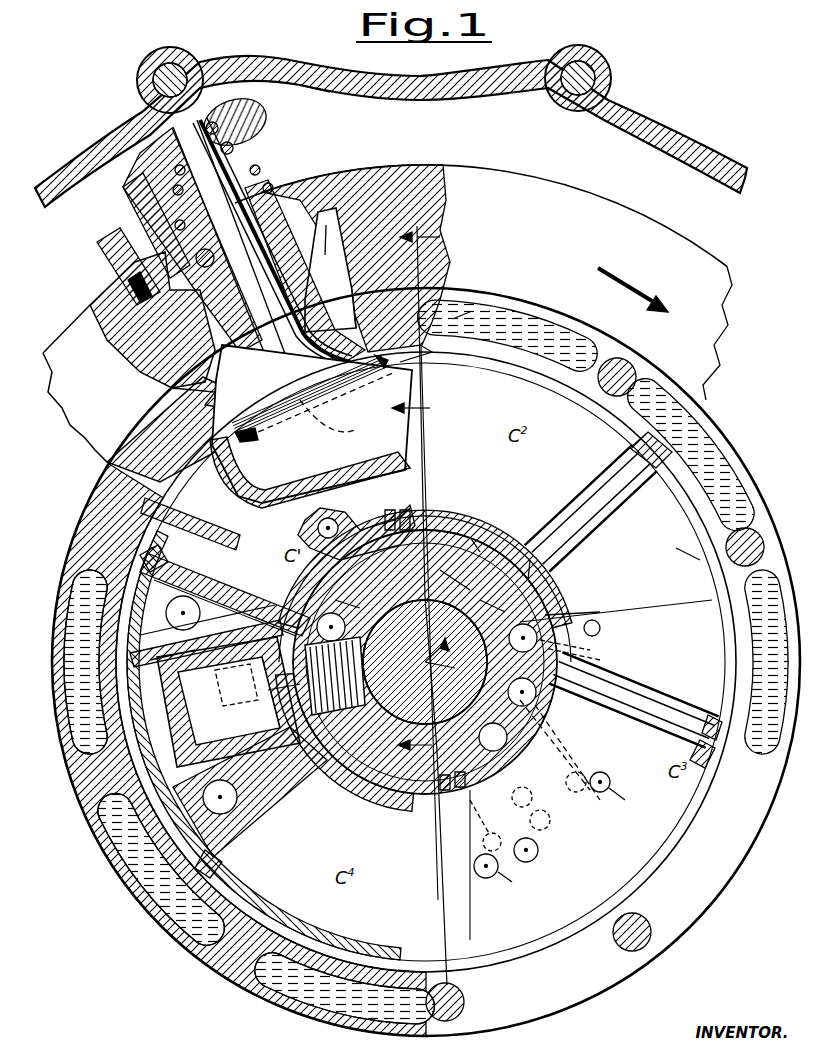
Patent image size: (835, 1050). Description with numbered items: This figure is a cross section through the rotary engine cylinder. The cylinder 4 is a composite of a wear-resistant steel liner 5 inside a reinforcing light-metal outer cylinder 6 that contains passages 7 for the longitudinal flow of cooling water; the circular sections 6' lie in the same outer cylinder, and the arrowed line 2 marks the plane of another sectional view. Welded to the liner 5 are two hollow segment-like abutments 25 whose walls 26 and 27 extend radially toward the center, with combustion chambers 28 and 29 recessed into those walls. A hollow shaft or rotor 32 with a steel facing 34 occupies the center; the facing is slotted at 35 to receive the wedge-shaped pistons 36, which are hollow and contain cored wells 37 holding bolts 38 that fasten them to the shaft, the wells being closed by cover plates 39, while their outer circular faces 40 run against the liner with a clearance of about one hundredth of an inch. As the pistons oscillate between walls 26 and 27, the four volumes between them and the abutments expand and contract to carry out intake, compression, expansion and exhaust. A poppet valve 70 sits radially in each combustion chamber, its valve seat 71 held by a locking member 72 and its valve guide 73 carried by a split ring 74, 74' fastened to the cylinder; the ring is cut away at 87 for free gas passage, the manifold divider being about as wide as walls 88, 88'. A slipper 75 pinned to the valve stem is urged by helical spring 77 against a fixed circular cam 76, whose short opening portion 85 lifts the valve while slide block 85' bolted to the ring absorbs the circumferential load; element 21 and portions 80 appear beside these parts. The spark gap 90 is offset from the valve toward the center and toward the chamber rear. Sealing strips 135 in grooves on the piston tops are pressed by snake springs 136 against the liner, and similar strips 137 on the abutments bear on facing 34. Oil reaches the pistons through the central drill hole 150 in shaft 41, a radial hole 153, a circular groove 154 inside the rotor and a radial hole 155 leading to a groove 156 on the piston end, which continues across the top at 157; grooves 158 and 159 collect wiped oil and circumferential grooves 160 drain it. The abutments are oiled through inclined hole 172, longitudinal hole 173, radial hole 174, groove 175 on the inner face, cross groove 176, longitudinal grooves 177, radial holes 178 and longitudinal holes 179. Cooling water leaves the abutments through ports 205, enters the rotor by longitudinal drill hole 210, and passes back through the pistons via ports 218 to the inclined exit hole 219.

The section line 2 is at (422, 596).
The cylinder 4 is at (602, 345).
The cylinder liner 5 is at (424, 352).
The reinforcing outer cylinder 6 is at (486, 291).
The bolt holes 6' is at (609, 678).
The cooling water passages 7 is at (548, 322).
The arm member 21 is at (572, 611).
The abutments 25 is at (426, 473).
The abutment wall 26 is at (424, 445).
The abutment wall 27 is at (205, 560).
The combustion chamber 28 is at (419, 406).
The combustion chamber 29 is at (322, 446).
The hollow shaft or rotor 32 is at (462, 540).
The shaft facing 34 is at (496, 548).
The slot 35 is at (530, 568).
The pistons 36 is at (610, 497).
The wells 37 is at (206, 636).
The bolts 38 is at (240, 692).
The cover plates 39 is at (228, 702).
The outer circular faces 40 is at (433, 589).
The shaft 41 is at (345, 743).
The poppet valve 70 is at (312, 424).
The valve seat 71 is at (220, 420).
The locking member 72 is at (200, 388).
The valve guide 73 is at (268, 190).
The split ring 74 is at (483, 272).
The split ring 74' is at (356, 246).
The slipper 75 is at (140, 150).
The cam 76 is at (434, 88).
The helical spring 77 is at (258, 167).
The eye lug 80 is at (190, 64).
The cam portion 85 is at (315, 99).
The slide block 85' is at (143, 239).
The cut-away 87 is at (330, 270).
The wall 88 is at (152, 320).
The wall 88' is at (332, 298).
The spark gap 90 is at (258, 438).
The sealing strips 135 is at (148, 560).
The snake spring 136 is at (190, 545).
The sealing strips 137 is at (379, 702).
The central drill hole 150 is at (424, 666).
The radial drill hole 153 is at (425, 662).
The circular groove 154 is at (460, 575).
The radial drill hole 155 is at (497, 599).
The groove 156 is at (594, 620).
The groove 157 is at (700, 605).
The grooves 158 is at (650, 700).
The groove 159 is at (660, 520).
The circumferential grooves 160 is at (598, 632).
The inclined drill hole 172 is at (524, 845).
The longitudinal drill hole 173 is at (338, 518).
The radial drill hole 174 is at (535, 789).
The groove 175 is at (425, 630).
The circumferential groove 176 is at (560, 775).
The longitudinal grooves 177 is at (429, 639).
The radial drill holes 178 is at (467, 818).
The longitudinal drill holes 179 is at (474, 855).
The ports 205 is at (576, 841).
The longitudinal drill hole 210 is at (427, 677).
The ports 218 is at (232, 808).
The exit drill hole 219 is at (537, 651).